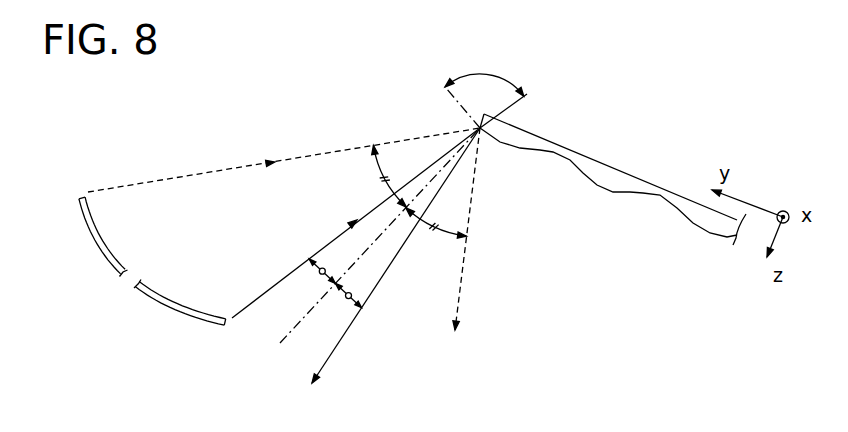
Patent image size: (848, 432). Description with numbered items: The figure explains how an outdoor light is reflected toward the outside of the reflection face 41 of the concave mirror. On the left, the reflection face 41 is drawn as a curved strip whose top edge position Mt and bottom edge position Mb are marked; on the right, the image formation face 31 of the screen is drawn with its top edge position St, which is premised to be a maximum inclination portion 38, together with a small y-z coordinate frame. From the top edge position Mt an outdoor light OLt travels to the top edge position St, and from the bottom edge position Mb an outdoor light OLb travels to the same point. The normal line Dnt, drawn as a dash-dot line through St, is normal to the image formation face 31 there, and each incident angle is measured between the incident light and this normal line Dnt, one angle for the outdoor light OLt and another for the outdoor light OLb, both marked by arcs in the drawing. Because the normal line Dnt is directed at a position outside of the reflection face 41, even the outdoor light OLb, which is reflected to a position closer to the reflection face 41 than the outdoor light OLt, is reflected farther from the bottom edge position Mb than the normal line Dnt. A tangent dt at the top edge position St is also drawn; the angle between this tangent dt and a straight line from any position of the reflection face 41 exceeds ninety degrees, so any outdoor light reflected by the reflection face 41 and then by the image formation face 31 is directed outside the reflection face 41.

The reflection face 41 is at (103, 232).
The image formation face 31 is at (619, 193).
The maximum inclination portion 38 is at (481, 130).
The top edge position of the reflection face Mt is at (84, 198).
The bottom edge position of the reflection face Mb is at (226, 322).
The outdoor light reflected at the top edge position OLt is at (157, 177).
The outdoor light reflected at the bottom edge position OLb is at (256, 300).
The normal line Dnt is at (292, 332).
The tangent dt is at (462, 111).